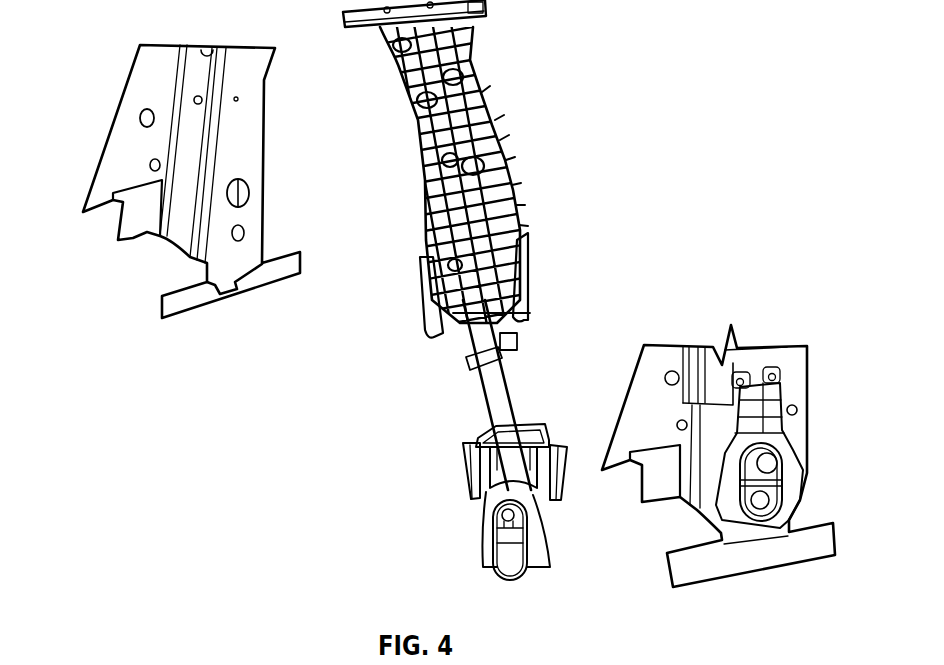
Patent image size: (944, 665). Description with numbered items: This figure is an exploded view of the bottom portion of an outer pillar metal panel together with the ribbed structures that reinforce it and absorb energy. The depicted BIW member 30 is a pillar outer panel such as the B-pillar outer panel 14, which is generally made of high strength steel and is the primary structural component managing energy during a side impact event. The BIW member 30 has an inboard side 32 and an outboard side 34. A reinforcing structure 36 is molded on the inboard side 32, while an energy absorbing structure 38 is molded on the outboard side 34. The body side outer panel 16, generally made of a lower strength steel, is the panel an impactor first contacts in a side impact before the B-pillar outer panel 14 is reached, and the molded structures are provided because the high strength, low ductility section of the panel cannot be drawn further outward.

The BIW member 30 is at (108, 36).
The inboard side 32 is at (250, 155).
The outboard side 34 is at (108, 126).
The B-pillar outer panel 14 is at (133, 242).
The reinforcing structure 36 is at (510, 150).
The energy absorbing structure 38 is at (472, 473).
The body side outer panel 16 is at (648, 483).